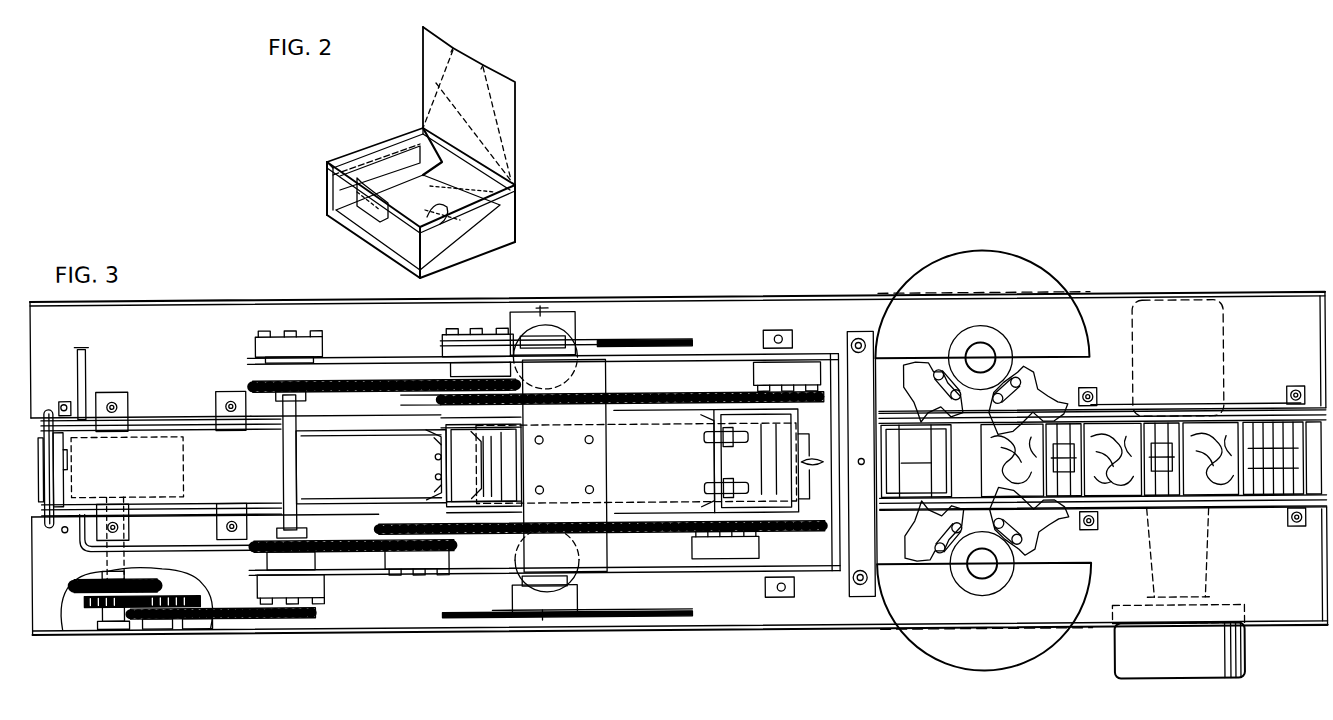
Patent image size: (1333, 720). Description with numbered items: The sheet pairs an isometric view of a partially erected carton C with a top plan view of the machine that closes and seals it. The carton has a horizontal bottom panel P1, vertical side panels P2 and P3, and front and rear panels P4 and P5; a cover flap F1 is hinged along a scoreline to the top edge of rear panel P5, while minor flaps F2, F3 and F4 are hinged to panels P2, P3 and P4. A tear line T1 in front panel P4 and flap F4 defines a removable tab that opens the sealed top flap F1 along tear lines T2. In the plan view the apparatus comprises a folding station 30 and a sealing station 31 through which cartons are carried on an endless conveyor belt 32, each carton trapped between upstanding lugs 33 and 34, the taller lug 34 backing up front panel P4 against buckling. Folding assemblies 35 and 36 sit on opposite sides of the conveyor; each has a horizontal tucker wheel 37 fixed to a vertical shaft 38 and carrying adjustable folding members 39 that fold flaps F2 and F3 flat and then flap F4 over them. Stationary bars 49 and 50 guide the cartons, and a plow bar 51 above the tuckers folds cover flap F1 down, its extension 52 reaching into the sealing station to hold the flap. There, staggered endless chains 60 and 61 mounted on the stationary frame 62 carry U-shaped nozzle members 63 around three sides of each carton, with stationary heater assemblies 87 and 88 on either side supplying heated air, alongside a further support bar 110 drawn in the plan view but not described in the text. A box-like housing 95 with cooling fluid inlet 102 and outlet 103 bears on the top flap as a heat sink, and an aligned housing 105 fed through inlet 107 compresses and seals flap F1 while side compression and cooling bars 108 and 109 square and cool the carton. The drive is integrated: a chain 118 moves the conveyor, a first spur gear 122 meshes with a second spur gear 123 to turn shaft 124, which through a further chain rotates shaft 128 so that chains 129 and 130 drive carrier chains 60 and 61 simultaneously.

In FIG. 2, the carton C is at (403, 93).
In FIG. 3, the carton C is at (911, 493).
In FIG. 2, the cover flap F1 is at (510, 110).
In FIG. 2, the minor flap F2 is at (352, 152).
In FIG. 2, the minor flap F3 is at (497, 197).
In FIG. 2, the minor flap F4 is at (335, 175).
In FIG. 2, the tear line T1 is at (330, 206).
In FIG. 2, the tear lines T2 is at (490, 94).
In FIG. 2, the bottom panel P1 is at (437, 215).
In FIG. 2, the side panel P2 is at (390, 152).
In FIG. 2, the side panel P3 is at (495, 233).
In FIG. 2, the front panel P4 is at (370, 228).
In FIG. 2, the rear panel P5 is at (483, 180).
In FIG. 3, the folding station 30 is at (1077, 280).
In FIG. 3, the sealing station 31 is at (745, 292).
In FIG. 3, the endless conveyor belt 32 is at (1258, 430).
In FIG. 3, the lug 33 is at (1242, 503).
In FIG. 3, the lug 34 is at (1175, 502).
In FIG. 3, the folding assembly 35 is at (1061, 390).
In FIG. 3, the folding assembly 36 is at (1061, 549).
In FIG. 3, the tucker wheel 37 is at (962, 355).
In FIG. 3, the shaft 38 is at (992, 352).
In FIG. 3, the folding members 39 is at (933, 400).
In FIG. 3, the stationary bar 49 is at (1166, 418).
In FIG. 3, the stationary bar 50 is at (1186, 502).
In FIG. 3, the plow bar 51 is at (922, 453).
In FIG. 3, the extension 52 is at (811, 464).
In FIG. 3, the endless chain 60 is at (643, 399).
In FIG. 3, the endless chain 61 is at (620, 531).
In FIG. 3, the stationary frame 62 is at (215, 310).
In FIG. 3, the U-shaped member 63 is at (402, 426).
In FIG. 3, the heater assembly 87 is at (586, 594).
In FIG. 3, the heater assembly 88 is at (580, 326).
In FIG. 3, the housing 95 is at (658, 473).
In FIG. 3, the inlet means 102 is at (703, 493).
In FIG. 3, the outlet means 103 is at (703, 441).
In FIG. 3, the housing 105 is at (343, 475).
In FIG. 3, the inlet 107 is at (86, 356).
In FIG. 3, the side compression and cooling bar 108 is at (176, 512).
In FIG. 3, the side compression and cooling bar 109 is at (180, 423).
In FIG. 3, the support bar 110 is at (660, 347).
In FIG. 3, the endless chain 118 is at (78, 582).
In FIG. 3, the first spur gear 122 is at (82, 602).
In FIG. 3, the second spur gear 123 is at (200, 600).
In FIG. 3, the shaft 124 is at (165, 590).
In FIG. 3, the shaft 128 is at (283, 445).
In FIG. 3, the endless chain 129 is at (340, 380).
In FIG. 3, the endless chain 130 is at (358, 556).